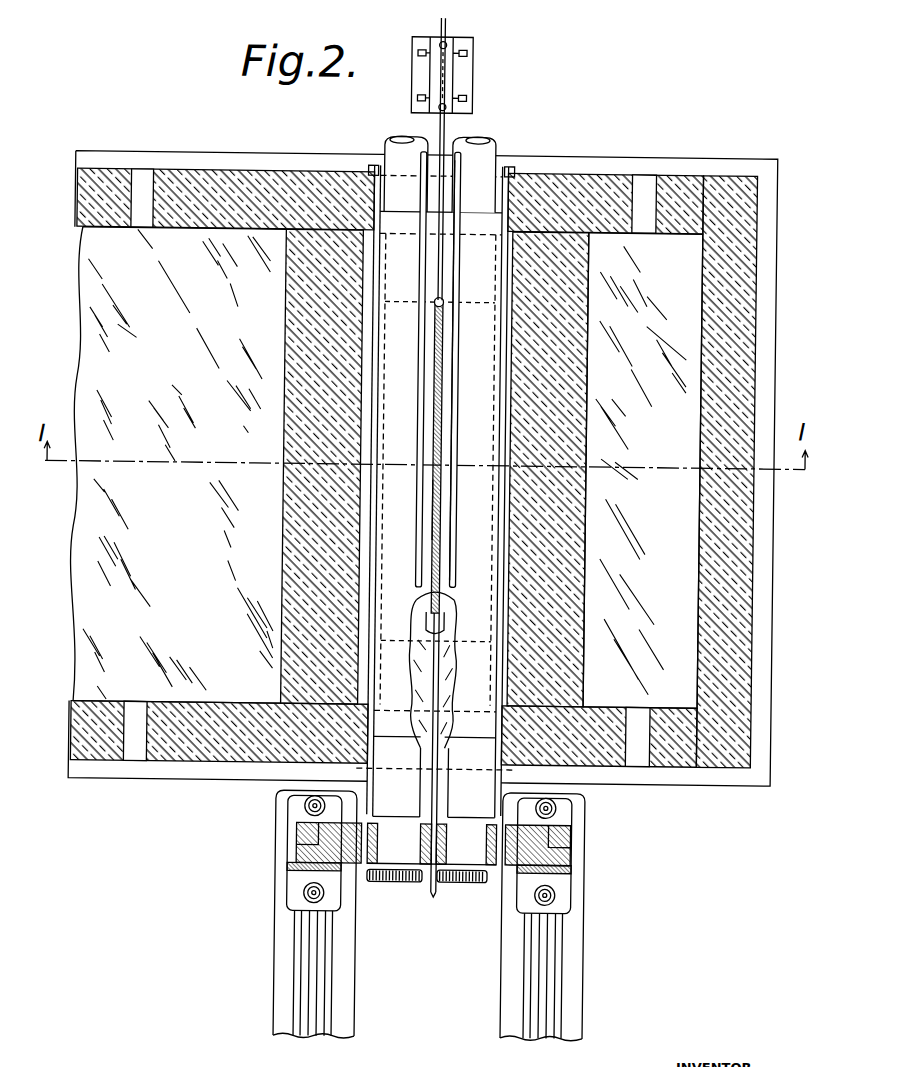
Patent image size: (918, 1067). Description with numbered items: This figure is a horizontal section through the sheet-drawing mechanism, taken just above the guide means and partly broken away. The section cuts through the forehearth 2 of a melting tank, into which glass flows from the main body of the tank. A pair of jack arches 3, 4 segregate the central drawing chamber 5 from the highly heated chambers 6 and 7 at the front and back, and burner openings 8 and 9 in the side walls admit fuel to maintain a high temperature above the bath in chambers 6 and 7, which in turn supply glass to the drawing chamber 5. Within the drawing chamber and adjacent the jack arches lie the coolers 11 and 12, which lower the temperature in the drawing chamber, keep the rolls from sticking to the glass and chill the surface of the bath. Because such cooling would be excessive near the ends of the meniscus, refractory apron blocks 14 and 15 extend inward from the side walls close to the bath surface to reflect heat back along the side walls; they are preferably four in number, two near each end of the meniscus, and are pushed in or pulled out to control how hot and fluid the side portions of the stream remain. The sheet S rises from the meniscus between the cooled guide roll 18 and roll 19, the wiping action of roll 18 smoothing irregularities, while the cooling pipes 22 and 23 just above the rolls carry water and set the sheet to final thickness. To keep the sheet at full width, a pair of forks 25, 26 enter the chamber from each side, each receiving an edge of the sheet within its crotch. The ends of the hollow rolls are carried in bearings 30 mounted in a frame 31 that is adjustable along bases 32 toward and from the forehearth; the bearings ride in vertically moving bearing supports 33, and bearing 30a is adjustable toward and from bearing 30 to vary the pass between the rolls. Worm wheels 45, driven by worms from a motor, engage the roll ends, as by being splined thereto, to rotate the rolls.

The forehearth 2 is at (306, 166).
The jack arch 3 is at (297, 520).
The jack arch 4 is at (578, 548).
The drawing chamber 5 is at (362, 346).
The highly heated chamber 6 is at (178, 465).
The highly heated chamber 7 is at (643, 470).
The burner opening 8 is at (138, 465).
The burner opening 9 is at (640, 471).
The cooler 11 is at (365, 405).
The cooler 12 is at (505, 383).
The refractory apron block 14 is at (365, 249).
The refractory apron block 15 is at (508, 194).
The guide roll 18 is at (471, 369).
The roll 19 is at (404, 368).
The cooling pipe 22 is at (450, 407).
The cooling pipe 23 is at (428, 398).
The fork 25 is at (440, 626).
The fork 26 is at (446, 27).
The bearing 30 is at (318, 880).
The bearing 30a is at (570, 878).
The frame 31 is at (310, 827).
The base 32 is at (300, 949).
The bearing support 33 is at (345, 852).
The worm wheel 45 is at (412, 881).
The sheet S is at (442, 508).